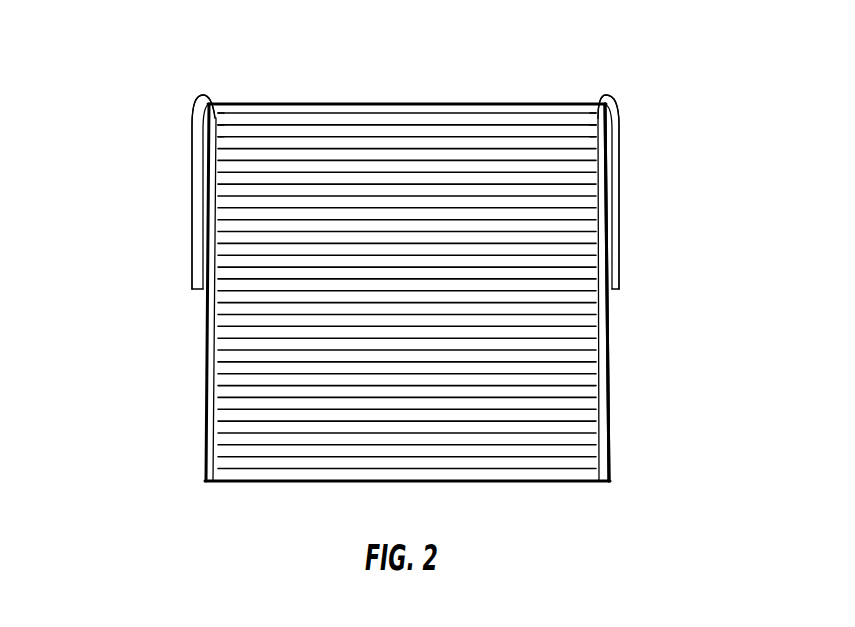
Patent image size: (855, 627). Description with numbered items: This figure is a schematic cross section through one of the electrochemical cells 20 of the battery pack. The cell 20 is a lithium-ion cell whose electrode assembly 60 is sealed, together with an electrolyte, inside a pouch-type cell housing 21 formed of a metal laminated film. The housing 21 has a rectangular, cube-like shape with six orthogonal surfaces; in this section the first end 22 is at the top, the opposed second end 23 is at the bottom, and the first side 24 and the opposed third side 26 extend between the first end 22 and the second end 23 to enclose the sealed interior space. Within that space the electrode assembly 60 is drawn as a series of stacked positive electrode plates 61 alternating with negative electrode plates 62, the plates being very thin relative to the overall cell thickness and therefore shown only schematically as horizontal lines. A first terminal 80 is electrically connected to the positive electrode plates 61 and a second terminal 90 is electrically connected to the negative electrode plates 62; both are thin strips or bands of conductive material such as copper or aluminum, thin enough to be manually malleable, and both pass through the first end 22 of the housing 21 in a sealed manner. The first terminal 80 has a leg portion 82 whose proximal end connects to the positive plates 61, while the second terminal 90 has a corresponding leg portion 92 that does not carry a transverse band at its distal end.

The electrochemical cell 20 is at (100, 150).
The cell housing 21 is at (613, 338).
The first end 22 is at (560, 102).
The second end 23 is at (555, 482).
The first side 24 is at (208, 348).
The third side 26 is at (607, 292).
The electrode assembly 60 is at (290, 126).
The positive electrode plates 61 is at (575, 148).
The negative electrode plates 62 is at (231, 140).
The first terminal 80 is at (195, 205).
The leg portion 82 is at (203, 192).
The second terminal 90 is at (616, 215).
The leg portion 92 is at (608, 192).